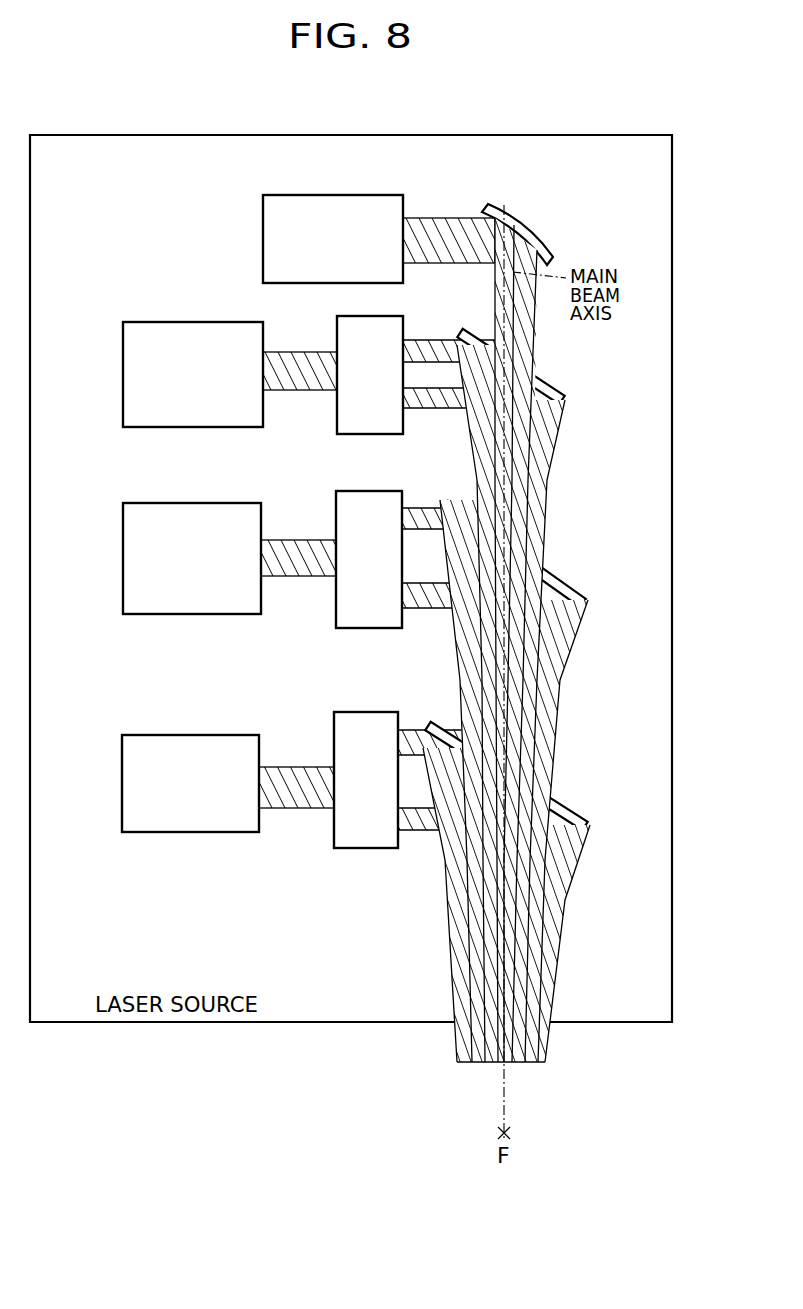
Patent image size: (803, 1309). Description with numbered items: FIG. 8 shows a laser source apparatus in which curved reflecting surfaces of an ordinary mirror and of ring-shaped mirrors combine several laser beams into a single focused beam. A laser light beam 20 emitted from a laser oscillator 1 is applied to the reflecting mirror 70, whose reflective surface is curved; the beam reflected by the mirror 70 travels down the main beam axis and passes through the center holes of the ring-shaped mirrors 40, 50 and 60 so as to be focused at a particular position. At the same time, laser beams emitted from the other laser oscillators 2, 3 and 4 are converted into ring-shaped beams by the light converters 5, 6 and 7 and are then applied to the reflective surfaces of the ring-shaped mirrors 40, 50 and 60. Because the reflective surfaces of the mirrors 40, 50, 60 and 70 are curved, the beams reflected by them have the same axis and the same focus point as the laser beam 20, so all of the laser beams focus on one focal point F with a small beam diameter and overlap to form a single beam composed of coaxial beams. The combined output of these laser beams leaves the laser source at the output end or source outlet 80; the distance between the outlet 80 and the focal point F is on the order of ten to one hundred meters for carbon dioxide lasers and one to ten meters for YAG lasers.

The laser oscillator 1 is at (386, 195).
The laser oscillator 2 is at (188, 322).
The laser oscillator 3 is at (180, 503).
The laser oscillator 4 is at (188, 735).
The light converter 5 is at (340, 316).
The light converter 6 is at (370, 491).
The light converter 7 is at (370, 712).
The laser light beam 20 is at (432, 218).
The ring-shaped mirror 40 is at (569, 397).
The ring-shaped mirror 50 is at (573, 597).
The ring-shaped mirror 60 is at (579, 815).
The reflecting mirror 70 is at (548, 242).
The source outlet 80 is at (546, 1024).